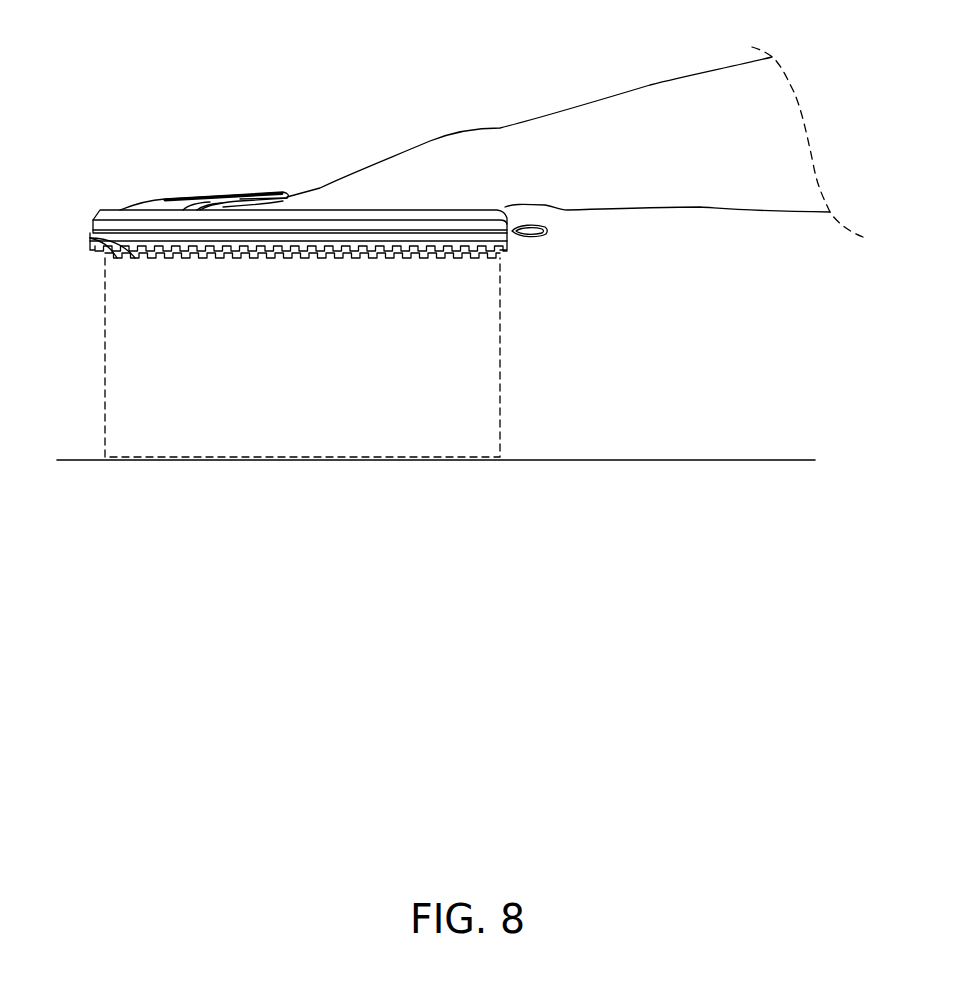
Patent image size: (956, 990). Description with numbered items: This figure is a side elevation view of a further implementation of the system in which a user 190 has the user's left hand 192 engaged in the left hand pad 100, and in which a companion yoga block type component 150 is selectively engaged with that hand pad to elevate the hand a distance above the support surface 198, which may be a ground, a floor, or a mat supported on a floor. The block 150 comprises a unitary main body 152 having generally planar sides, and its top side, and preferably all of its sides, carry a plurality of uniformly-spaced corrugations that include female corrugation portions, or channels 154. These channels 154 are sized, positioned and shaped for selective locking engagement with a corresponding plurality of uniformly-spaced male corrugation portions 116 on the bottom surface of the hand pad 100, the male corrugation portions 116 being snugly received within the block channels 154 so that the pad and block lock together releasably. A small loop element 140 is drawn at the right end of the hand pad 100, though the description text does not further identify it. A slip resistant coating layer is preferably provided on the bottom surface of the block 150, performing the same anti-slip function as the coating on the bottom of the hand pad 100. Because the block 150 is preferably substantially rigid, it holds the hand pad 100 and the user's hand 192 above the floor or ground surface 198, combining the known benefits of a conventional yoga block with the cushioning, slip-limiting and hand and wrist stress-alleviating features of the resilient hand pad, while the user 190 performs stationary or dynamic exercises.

The left hand pad 100 is at (118, 206).
The male corrugation portions 116 is at (468, 253).
The pull loop 140 is at (533, 238).
The yoga block type component 150 is at (96, 302).
The unitary main body 152 is at (322, 361).
The channels 154 is at (90, 238).
The user 190 is at (538, 113).
The user's left hand 192 is at (320, 185).
The support surface 198 is at (675, 460).